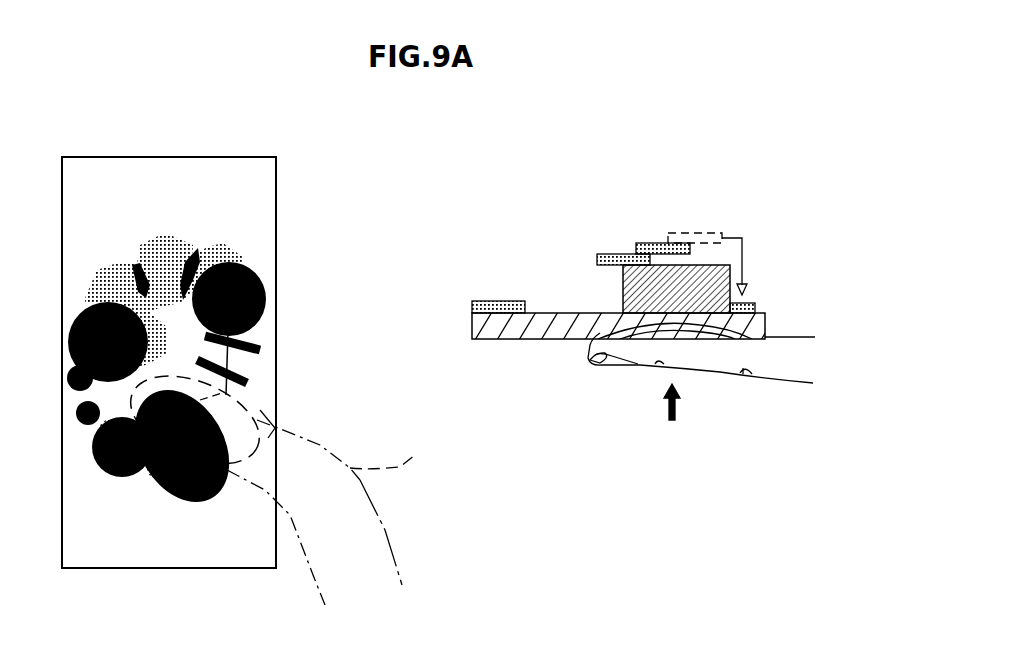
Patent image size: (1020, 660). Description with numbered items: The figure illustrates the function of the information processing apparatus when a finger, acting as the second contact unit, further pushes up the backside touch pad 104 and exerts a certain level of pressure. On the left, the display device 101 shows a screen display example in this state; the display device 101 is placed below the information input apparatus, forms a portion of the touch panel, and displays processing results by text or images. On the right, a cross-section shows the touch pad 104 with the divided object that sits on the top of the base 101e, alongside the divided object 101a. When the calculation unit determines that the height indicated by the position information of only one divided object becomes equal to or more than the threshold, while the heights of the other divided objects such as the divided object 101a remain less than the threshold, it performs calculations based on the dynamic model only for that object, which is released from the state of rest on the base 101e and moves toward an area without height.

The display device 101 is at (214, 157).
The divided object 101a is at (490, 300).
The base 101e is at (623, 293).
The touch pad 104 is at (548, 340).